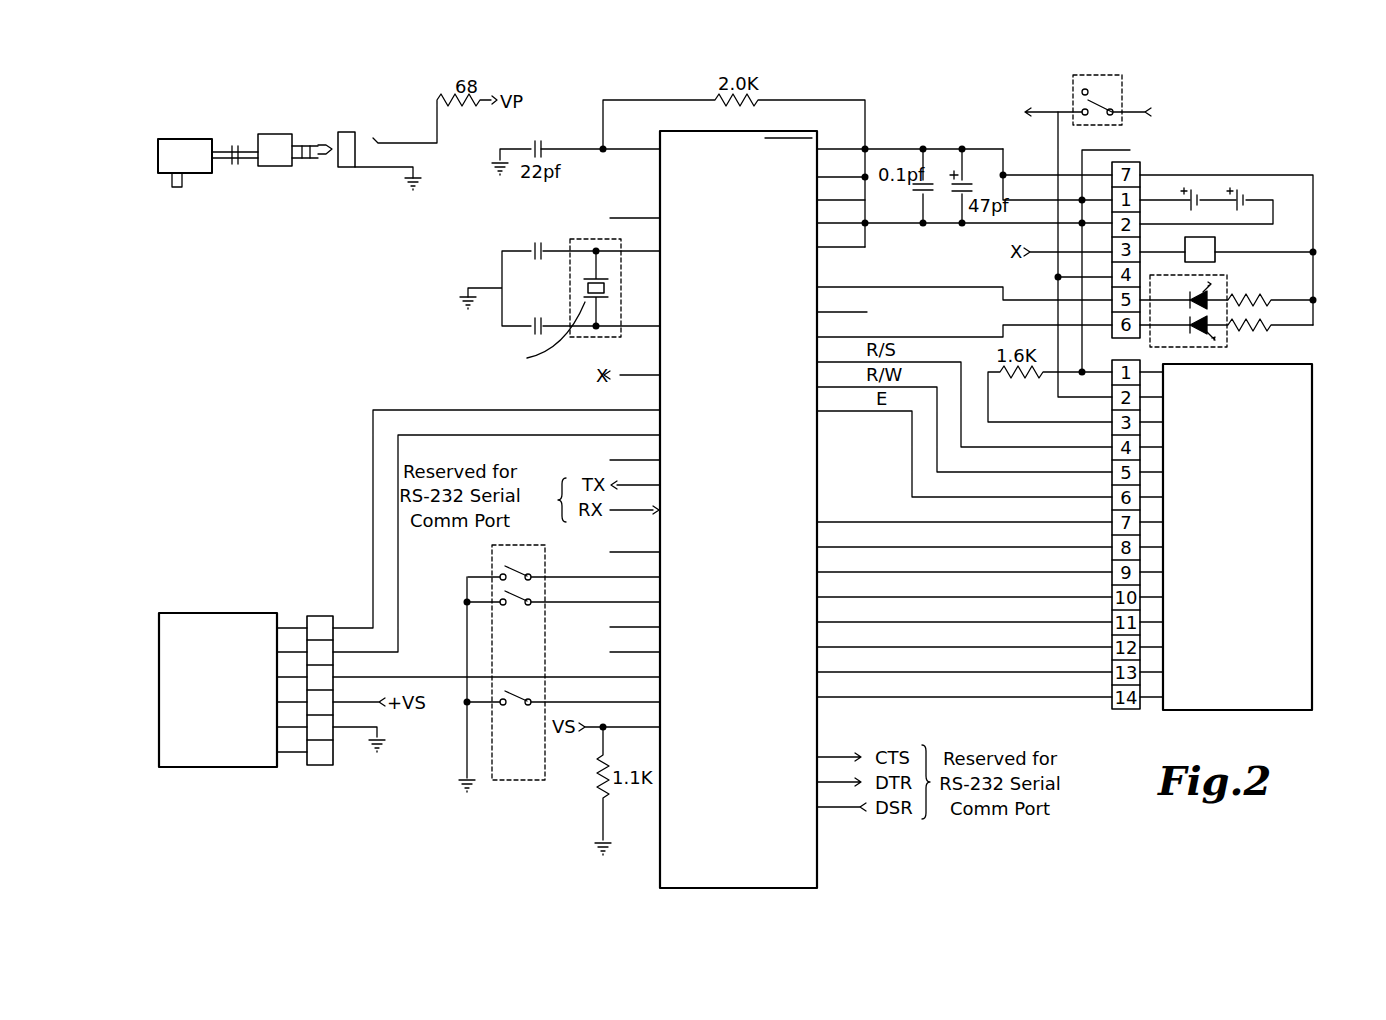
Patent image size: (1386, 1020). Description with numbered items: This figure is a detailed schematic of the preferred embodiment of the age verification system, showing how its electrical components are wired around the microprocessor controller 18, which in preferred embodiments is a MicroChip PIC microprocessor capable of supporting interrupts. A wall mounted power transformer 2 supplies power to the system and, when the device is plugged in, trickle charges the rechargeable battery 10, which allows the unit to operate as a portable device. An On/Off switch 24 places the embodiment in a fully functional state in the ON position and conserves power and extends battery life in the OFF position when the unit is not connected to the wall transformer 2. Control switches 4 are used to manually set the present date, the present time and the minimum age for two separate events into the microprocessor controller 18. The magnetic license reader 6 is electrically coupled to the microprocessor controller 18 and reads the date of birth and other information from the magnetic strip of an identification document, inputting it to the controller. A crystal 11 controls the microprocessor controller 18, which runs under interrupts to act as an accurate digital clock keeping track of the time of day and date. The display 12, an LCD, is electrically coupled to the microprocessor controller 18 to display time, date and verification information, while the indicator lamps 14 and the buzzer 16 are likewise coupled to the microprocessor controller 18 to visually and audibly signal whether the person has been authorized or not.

The wall mounted power transformer 2 is at (200, 173).
The control switches 4 is at (490, 557).
The magnetic license reader 6 is at (216, 612).
The rechargeable battery 10 is at (1218, 196).
The crystal 11 is at (566, 238).
The display 12 is at (1312, 635).
The indicator lamps 14 is at (1213, 347).
The buzzer 16 is at (1215, 258).
The microprocessor controller 18 is at (816, 855).
The On/Off switch 24 is at (1082, 92).